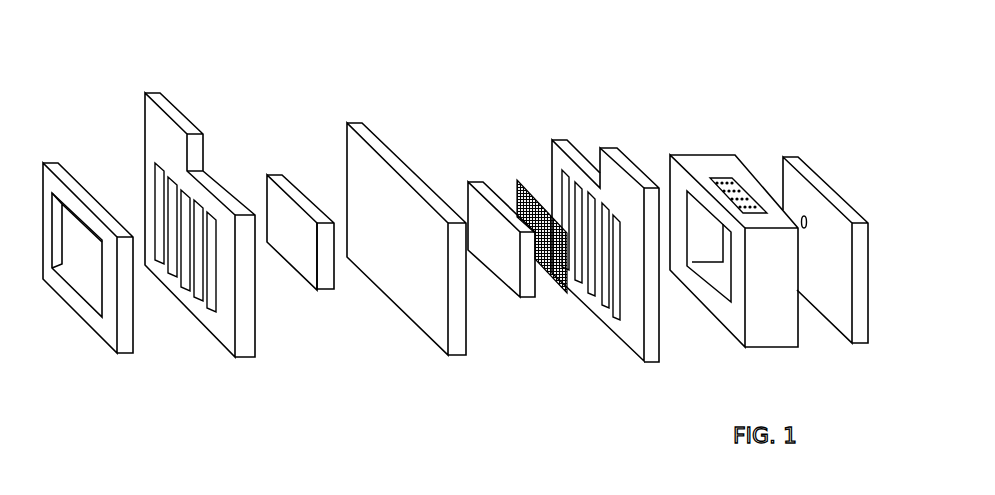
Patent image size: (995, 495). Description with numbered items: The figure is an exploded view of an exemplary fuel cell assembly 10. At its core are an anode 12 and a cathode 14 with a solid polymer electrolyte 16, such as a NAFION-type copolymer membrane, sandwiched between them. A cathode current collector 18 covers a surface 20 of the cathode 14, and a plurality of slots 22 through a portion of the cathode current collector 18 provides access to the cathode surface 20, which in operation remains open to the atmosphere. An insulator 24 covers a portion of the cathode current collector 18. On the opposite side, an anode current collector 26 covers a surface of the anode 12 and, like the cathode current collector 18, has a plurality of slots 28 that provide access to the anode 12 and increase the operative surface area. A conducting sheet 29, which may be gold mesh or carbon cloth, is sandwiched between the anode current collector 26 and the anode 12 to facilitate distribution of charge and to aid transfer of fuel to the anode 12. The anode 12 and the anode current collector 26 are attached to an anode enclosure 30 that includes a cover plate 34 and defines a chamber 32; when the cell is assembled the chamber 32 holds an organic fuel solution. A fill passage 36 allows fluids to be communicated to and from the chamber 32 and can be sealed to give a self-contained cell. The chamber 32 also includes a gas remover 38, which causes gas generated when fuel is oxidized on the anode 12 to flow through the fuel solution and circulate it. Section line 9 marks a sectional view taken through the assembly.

The fuel cell assembly 10 is at (106, 71).
The insulator 24 is at (110, 332).
The cathode current collector 18 is at (200, 215).
The slots 22 is at (168, 276).
The cathode 14 is at (277, 184).
The surface of the cathode 20 is at (327, 273).
The solid polymer electrolyte 16 is at (358, 158).
The anode 12 is at (471, 178).
The conducting sheet 29 is at (518, 181).
The anode current collector 26 is at (595, 215).
The slots 28 is at (619, 320).
The section line 9- 9 is at (840, 351).
The anode enclosure 30 is at (734, 201).
The chamber 32 is at (693, 256).
The gas remover 38 is at (721, 167).
The cover plate 34 is at (825, 207).
The fill passage 36 is at (806, 217).